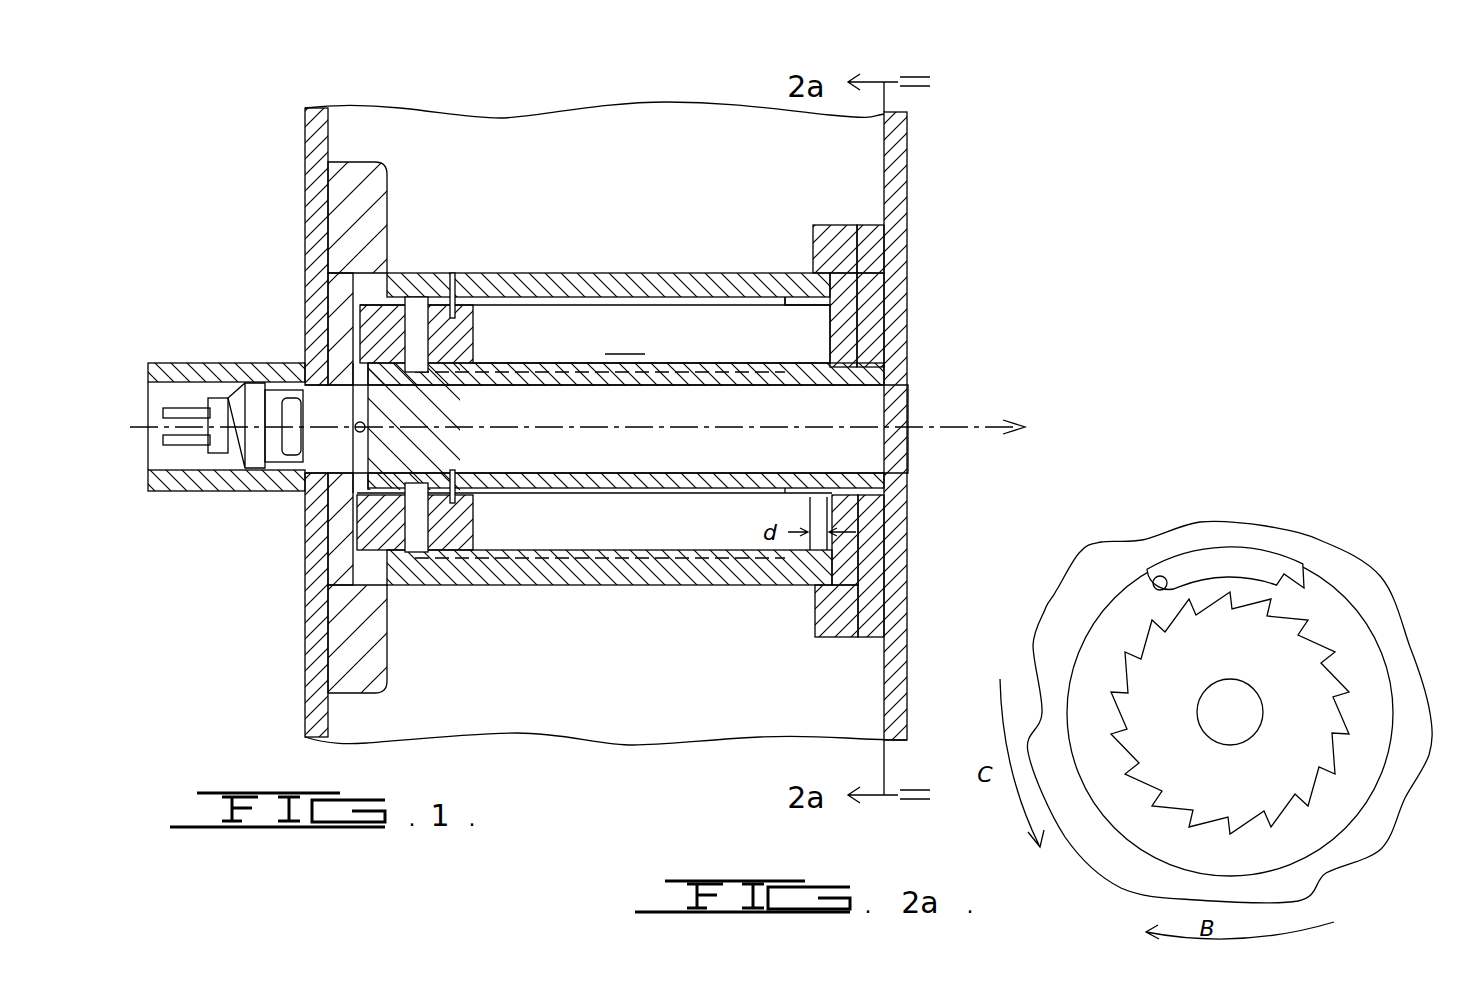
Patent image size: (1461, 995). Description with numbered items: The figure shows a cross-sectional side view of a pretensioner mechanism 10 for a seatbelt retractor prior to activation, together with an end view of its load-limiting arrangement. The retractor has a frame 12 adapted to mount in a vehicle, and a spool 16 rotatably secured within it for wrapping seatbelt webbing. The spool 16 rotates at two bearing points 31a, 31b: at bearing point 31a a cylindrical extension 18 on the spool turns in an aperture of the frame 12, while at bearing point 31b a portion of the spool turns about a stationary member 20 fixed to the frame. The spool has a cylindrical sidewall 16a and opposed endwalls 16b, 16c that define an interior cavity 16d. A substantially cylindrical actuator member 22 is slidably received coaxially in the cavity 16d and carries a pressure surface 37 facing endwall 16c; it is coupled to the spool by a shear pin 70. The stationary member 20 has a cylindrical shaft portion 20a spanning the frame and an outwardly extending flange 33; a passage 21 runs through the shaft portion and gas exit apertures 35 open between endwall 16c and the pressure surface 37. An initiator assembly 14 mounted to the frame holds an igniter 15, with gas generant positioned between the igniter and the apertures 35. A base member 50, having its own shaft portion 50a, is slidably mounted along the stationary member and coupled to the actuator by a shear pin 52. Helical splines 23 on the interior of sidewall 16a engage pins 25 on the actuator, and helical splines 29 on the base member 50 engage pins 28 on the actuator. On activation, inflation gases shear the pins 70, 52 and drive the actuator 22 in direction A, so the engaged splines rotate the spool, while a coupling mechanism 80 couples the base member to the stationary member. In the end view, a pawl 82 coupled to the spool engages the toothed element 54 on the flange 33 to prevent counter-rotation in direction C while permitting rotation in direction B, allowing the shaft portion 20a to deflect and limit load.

In FIG. 1, the pretensioner mechanism 10 is at (220, 686).
In FIG. 1, the retractor frame 12 is at (296, 722).
In FIG. 1, the initiator assembly 14 is at (165, 366).
In FIG. 1, the igniter 15 is at (240, 448).
In FIG. 1, the spool 16 is at (363, 186).
In FIG. 1, the cylindrical sidewall 16a is at (512, 282).
In FIG. 1, the endwall 16b is at (847, 310).
In FIG. 1, the endwall 16c is at (337, 323).
In FIG. 1, the interior cavity 16d is at (651, 346).
In FIG. 1, the cylindrical extension 18 is at (893, 478).
In FIG. 1, the stationary member 20 is at (688, 488).
In FIG. 1, the shaft portion 20a is at (315, 475).
In FIG. 1, the passage 21 is at (312, 382).
In FIG. 1, the actuator member 22 is at (458, 558).
In FIG. 1, the helical splines 23 is at (594, 302).
In FIG. 1, the pins 25 is at (437, 334).
In FIG. 1, the pins 28 is at (413, 503).
In FIG. 1, the helical splines 29 is at (693, 365).
In FIG. 1, the bearing point 31a is at (893, 495).
In FIG. 1, the bearing point 31b is at (343, 490).
In FIG. 1, the flange 33 is at (875, 353).
In FIG. 1, the gas exit apertures 35 is at (372, 415).
In FIG. 1, the pressure surface 37 is at (362, 322).
In FIG. 1, the base member 50 is at (799, 346).
In FIG. 2a, the base member 50 is at (1154, 514).
In FIG. 1, the shaft portion 50a is at (598, 497).
In FIG. 1, the shear pin 52 is at (455, 490).
In FIG. 2a, the ratchet wheel 54 is at (1274, 788).
In FIG. 1, the shear pin 70 is at (452, 277).
In FIG. 1, the coupling mechanism 80 is at (813, 367).
In FIG. 1, the pawl 82 is at (873, 247).
In FIG. 2a, the pawl 82 is at (1229, 562).